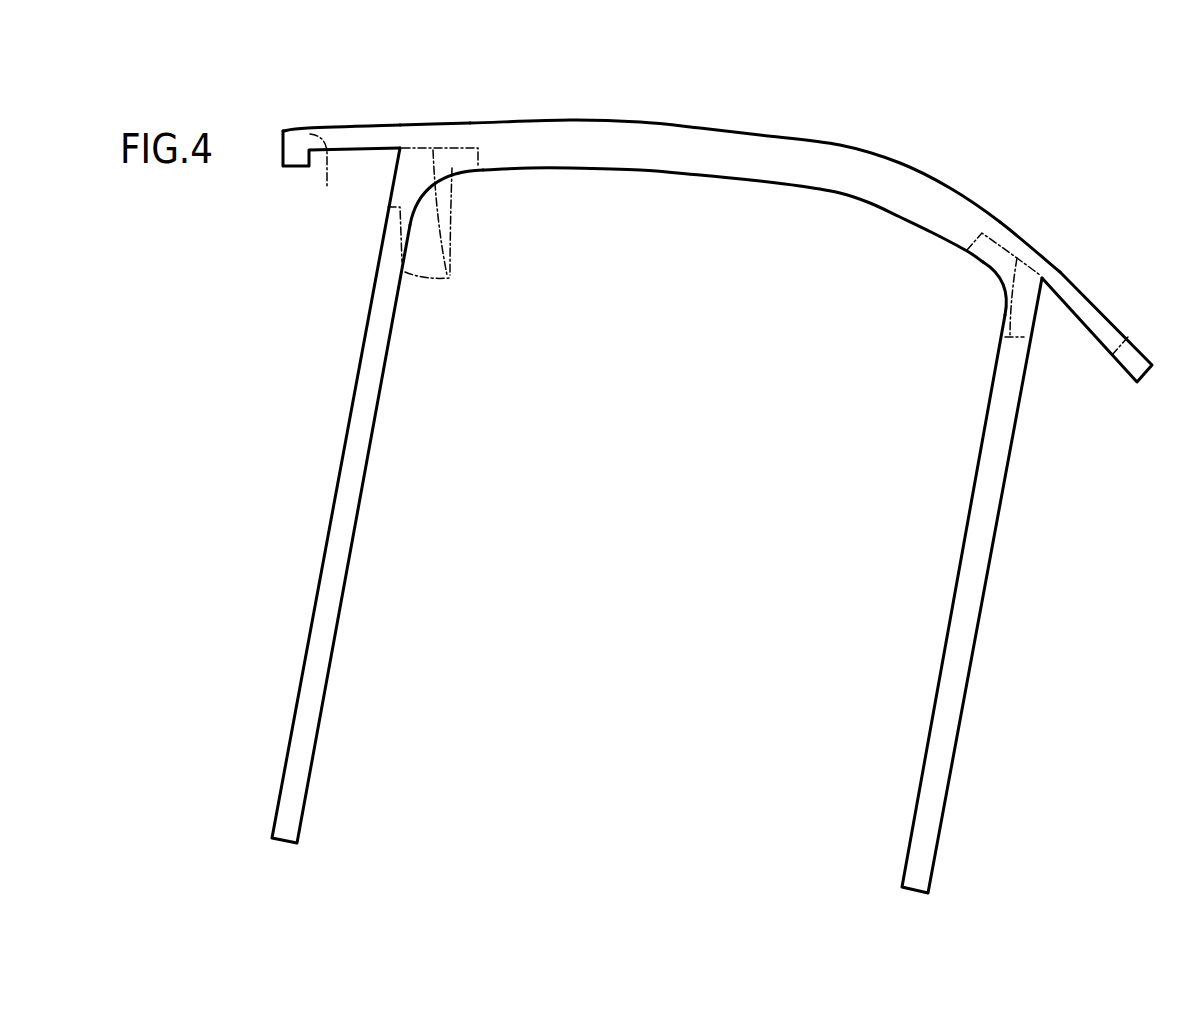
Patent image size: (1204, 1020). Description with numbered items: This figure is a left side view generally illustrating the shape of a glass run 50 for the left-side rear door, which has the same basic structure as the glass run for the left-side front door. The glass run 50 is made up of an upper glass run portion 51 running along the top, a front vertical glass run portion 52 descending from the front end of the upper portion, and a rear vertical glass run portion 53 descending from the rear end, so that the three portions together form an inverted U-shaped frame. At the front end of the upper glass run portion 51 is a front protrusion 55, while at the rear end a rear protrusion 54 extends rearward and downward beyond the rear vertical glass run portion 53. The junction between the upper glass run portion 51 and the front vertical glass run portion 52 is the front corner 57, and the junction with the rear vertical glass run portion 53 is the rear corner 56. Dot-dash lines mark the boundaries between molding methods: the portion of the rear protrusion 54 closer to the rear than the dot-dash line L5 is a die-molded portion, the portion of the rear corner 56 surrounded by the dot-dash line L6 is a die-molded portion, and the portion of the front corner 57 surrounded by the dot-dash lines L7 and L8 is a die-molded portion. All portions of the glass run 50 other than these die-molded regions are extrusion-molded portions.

The glass run 50 is at (734, 112).
The upper glass run portion 51 is at (838, 177).
The front vertical glass run portion 52 is at (320, 632).
The rear vertical glass run portion 53 is at (968, 608).
The rear protrusion 54 is at (1087, 307).
The front protrusion 55 is at (348, 133).
The rear corner 56 is at (997, 265).
The front corner 57 is at (412, 167).
The dot-dash line L5 is at (1128, 337).
The dot-dash line L6 is at (1023, 277).
The dot-dash line L7 is at (435, 226).
The dot-dash line L8 is at (328, 179).